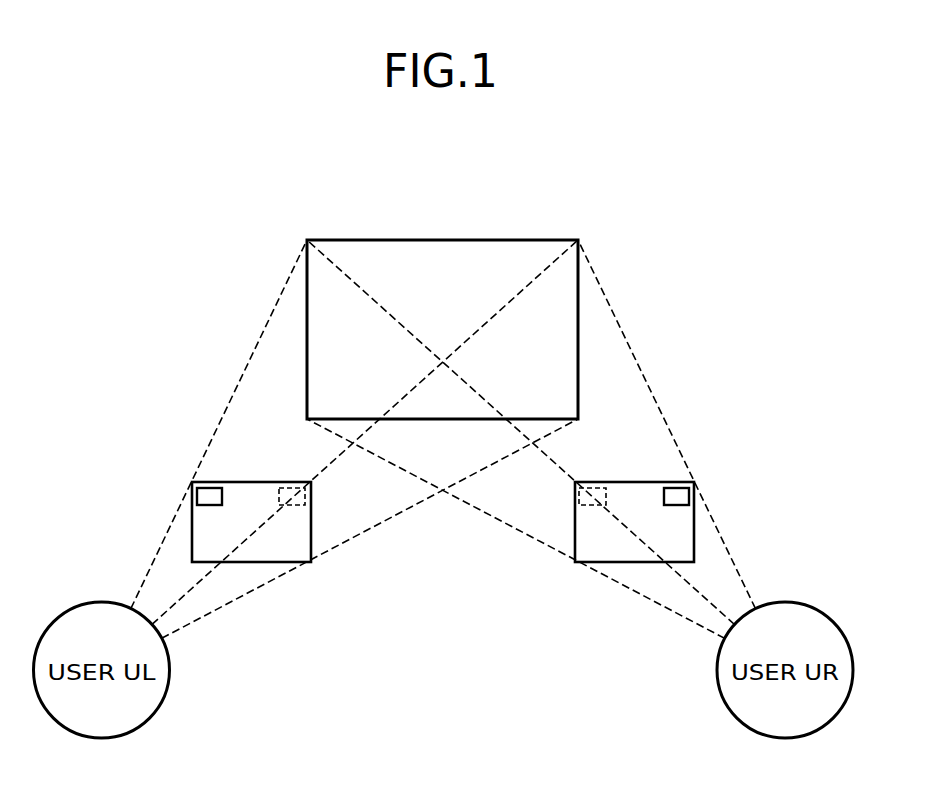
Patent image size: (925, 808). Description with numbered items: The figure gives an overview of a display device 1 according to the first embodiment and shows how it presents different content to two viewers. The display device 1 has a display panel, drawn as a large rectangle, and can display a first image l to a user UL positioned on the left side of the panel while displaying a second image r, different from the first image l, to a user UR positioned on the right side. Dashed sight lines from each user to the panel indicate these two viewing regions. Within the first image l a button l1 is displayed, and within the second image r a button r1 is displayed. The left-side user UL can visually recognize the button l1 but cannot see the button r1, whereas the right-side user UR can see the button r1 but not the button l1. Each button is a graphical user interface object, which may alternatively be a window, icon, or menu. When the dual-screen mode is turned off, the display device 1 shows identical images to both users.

The display device 1 is at (579, 204).
The first image l is at (251, 522).
The second image r is at (634, 522).
The button l1 is at (210, 488).
The button r1 is at (676, 488).